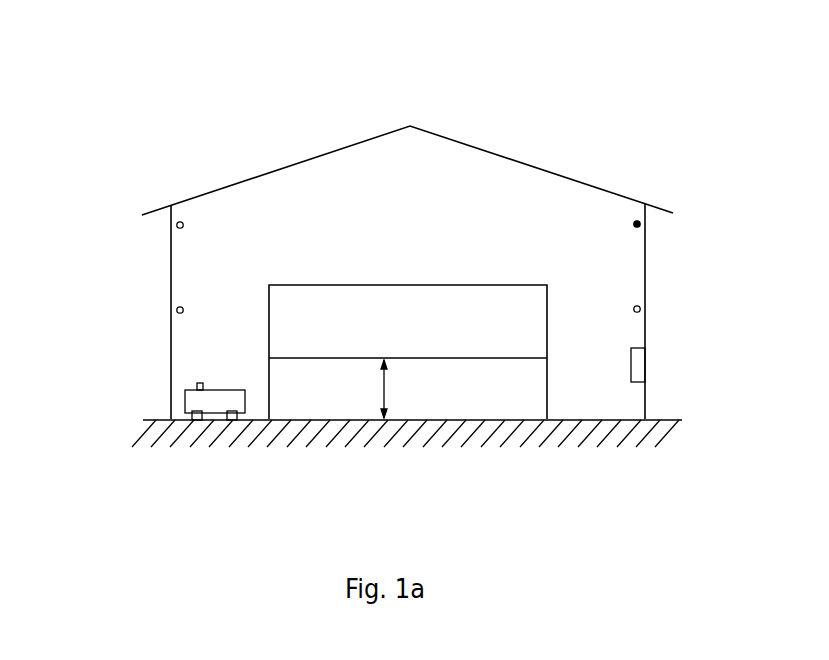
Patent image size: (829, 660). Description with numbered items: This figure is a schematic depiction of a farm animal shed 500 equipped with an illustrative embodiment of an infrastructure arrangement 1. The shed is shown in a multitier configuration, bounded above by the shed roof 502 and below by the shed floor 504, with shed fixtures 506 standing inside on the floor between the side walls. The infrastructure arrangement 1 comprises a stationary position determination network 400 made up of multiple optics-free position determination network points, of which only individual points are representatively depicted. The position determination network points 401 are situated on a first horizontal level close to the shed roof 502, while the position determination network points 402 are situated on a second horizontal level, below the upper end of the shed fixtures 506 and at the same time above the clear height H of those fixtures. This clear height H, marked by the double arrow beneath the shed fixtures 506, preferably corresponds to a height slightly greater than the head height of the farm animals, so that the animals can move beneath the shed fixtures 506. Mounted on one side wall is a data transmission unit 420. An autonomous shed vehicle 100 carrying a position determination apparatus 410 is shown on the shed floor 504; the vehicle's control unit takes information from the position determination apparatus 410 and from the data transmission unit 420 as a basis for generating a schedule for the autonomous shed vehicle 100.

The farm animal shed 500 is at (207, 98).
The shed roof 502 is at (508, 158).
The floor 504 is at (582, 421).
The shed fixtures 506 is at (412, 283).
The clear height H is at (374, 420).
The position determination network 400 is at (111, 230).
The infrastructure arrangement 1 is at (160, 323).
The position determination network points 401 is at (177, 226).
The position determination network points 402 is at (177, 308).
The data transmission unit 420 is at (640, 365).
The autonomous shed vehicle 100 is at (180, 400).
The position determination apparatus 410 is at (197, 384).